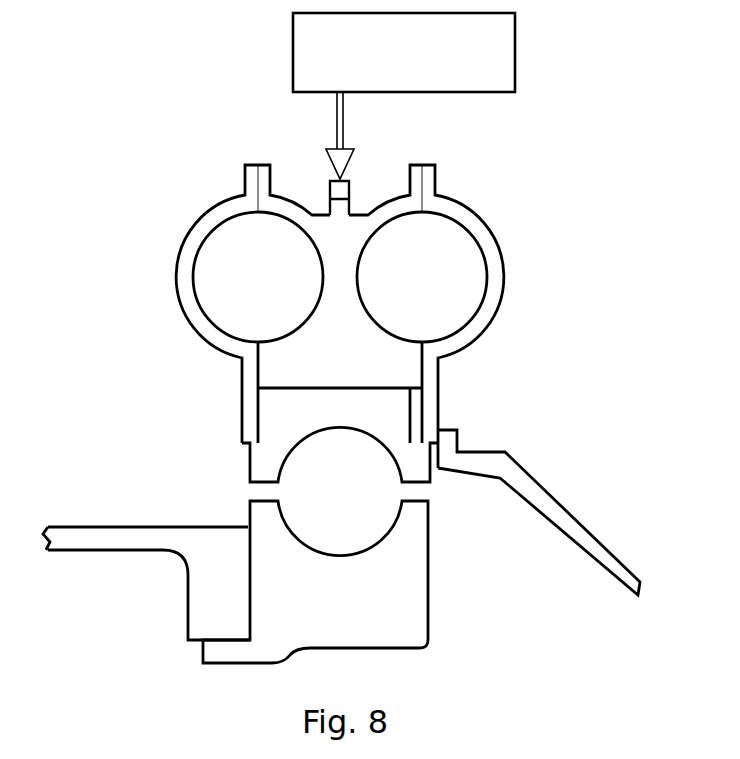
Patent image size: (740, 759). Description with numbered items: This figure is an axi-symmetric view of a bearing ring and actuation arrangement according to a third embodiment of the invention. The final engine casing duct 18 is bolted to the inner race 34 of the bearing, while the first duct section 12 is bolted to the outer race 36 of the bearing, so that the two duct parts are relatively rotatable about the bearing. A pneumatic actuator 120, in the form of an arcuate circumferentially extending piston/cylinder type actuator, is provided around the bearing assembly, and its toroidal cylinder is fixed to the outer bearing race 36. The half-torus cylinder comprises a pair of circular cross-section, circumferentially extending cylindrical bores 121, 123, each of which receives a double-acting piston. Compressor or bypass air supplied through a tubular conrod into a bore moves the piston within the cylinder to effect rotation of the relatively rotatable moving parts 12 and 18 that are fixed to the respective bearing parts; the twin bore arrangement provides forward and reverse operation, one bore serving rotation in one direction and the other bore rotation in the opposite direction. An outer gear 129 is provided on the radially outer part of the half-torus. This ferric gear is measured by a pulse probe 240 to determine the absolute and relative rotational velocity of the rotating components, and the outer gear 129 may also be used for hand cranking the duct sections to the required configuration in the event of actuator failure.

The pulse probe 240 is at (515, 47).
The pneumatic actuator 120 is at (300, 160).
The cylindrical bore 121 is at (235, 289).
The cylindrical bore 123 is at (399, 289).
The outer gear 129 is at (349, 192).
The outer race 36 is at (418, 460).
The first duct section 12 is at (577, 515).
The inner race 34 is at (430, 547).
The final engine casing duct 18 is at (112, 535).